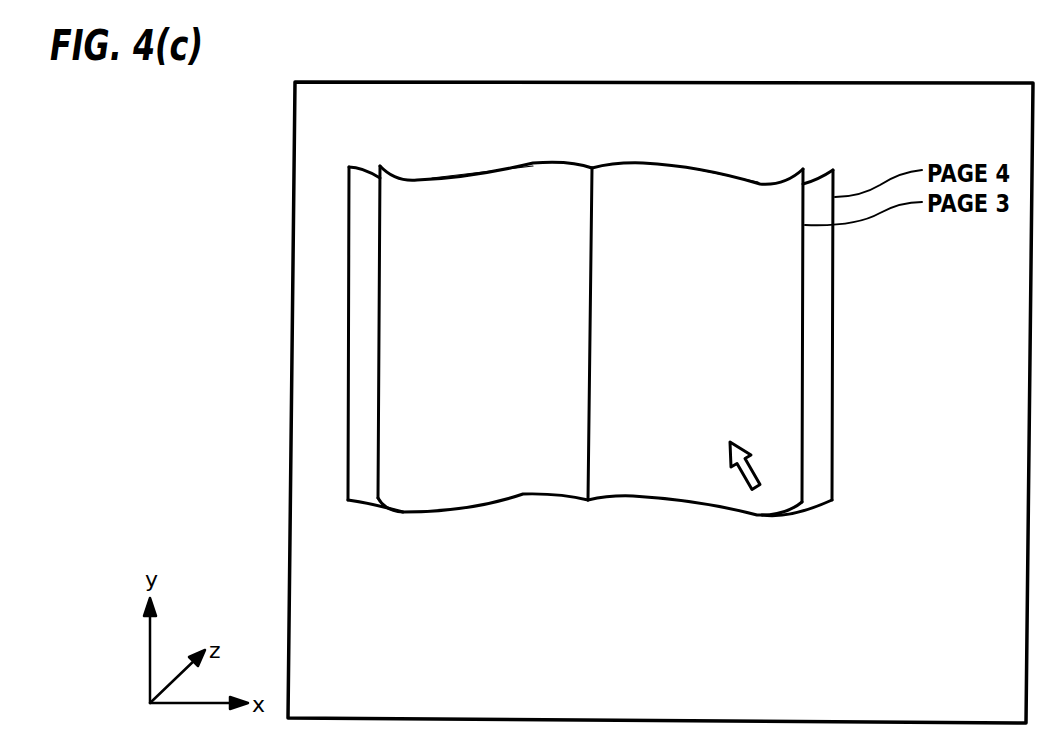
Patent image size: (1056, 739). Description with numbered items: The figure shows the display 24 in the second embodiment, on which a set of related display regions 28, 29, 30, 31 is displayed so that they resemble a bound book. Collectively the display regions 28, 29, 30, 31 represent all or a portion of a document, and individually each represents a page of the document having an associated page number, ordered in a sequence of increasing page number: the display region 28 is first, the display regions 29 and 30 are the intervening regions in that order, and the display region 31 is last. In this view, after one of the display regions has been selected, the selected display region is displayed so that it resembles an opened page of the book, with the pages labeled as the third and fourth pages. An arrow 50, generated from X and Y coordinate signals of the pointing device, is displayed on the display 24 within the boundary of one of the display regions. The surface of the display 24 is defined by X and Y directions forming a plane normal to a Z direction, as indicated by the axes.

The display 24 is at (295, 115).
The display region 28 is at (397, 512).
The display region 29 is at (515, 497).
The display region 30 is at (695, 505).
The display region 31 is at (807, 515).
The arrow 50 is at (727, 451).